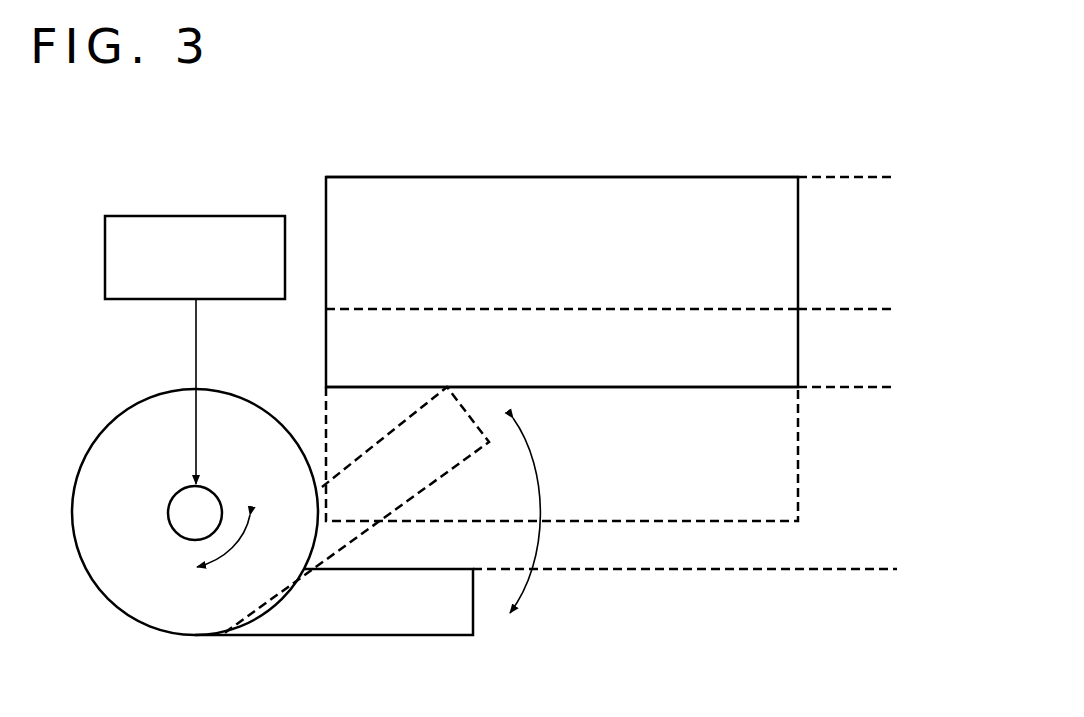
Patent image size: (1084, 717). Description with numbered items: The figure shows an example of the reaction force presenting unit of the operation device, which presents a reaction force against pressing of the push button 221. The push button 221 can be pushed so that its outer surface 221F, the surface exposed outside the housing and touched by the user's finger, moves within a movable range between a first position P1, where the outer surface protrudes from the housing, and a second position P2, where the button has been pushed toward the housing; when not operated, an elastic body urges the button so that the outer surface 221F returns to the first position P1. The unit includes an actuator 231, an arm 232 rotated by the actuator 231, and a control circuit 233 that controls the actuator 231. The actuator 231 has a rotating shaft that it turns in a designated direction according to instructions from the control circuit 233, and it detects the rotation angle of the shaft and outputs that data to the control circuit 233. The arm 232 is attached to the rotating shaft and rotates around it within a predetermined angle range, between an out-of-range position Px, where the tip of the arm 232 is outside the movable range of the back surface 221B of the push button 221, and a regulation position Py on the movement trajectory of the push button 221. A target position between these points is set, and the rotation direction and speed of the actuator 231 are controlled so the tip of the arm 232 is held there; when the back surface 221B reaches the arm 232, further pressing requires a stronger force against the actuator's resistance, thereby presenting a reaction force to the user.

The push button 221 is at (346, 349).
The outer surface 221F is at (597, 175).
The back surface 221B is at (686, 383).
The actuator 231 is at (164, 534).
The arm 232 is at (368, 607).
The control circuit 233 is at (217, 214).
The first position P1 is at (870, 173).
The second position P2 is at (870, 308).
The regulation position Py is at (869, 382).
The out-of-range position Px is at (919, 568).